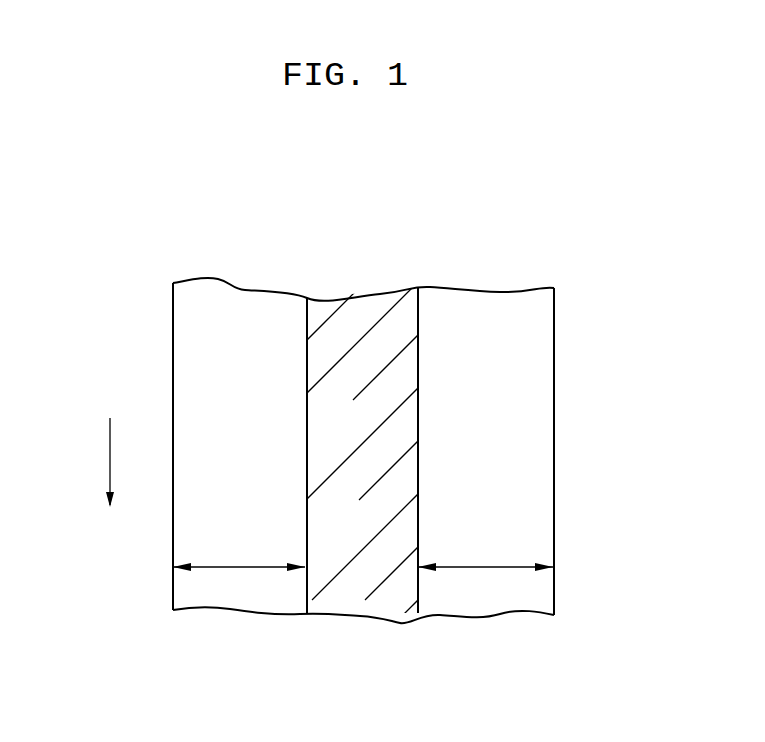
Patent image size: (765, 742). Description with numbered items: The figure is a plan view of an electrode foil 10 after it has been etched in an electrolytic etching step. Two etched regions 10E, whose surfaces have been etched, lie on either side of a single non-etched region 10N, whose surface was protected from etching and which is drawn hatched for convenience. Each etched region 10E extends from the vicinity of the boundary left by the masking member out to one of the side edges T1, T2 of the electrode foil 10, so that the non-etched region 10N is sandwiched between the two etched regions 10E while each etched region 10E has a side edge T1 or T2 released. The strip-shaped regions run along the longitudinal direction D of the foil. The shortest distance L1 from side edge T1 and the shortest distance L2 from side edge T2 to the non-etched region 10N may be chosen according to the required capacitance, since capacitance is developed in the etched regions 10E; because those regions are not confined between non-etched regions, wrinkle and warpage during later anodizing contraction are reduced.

The electrode foil 10 is at (555, 215).
The etched region 10E is at (305, 266).
The non-etched region 10N is at (417, 268).
The side edge T1 is at (172, 358).
The side edge T2 is at (556, 418).
The longitudinal direction D is at (99, 462).
The shortest distance L1 is at (239, 548).
The shortest distance L2 is at (485, 548).